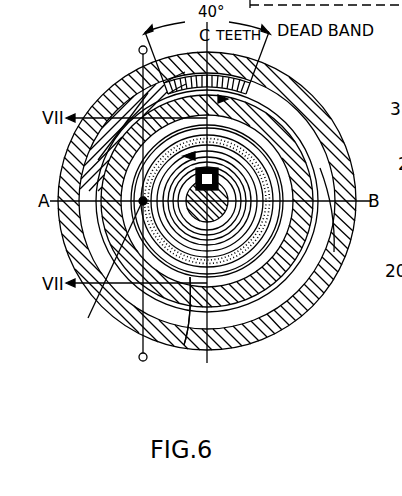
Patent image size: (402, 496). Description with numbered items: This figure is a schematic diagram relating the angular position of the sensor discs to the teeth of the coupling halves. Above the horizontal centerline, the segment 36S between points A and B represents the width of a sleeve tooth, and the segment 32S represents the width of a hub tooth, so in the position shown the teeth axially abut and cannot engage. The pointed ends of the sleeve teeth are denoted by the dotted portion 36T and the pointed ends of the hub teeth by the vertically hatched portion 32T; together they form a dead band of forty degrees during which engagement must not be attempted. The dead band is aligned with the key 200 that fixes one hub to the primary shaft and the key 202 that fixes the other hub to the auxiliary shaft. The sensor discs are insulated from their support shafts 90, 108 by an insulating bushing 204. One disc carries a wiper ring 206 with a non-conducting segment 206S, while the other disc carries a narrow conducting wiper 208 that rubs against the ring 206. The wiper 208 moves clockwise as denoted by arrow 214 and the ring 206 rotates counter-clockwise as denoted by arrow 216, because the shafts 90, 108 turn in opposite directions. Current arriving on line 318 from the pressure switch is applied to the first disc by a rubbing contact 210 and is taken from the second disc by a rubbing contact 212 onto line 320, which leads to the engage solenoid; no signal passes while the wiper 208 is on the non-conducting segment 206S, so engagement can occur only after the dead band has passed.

The insulating bushing 204 is at (232, 243).
The key 200 is at (330, 150).
The key 202 is at (330, 141).
The conducting wiper 208 is at (297, 106).
The arrow 216 is at (325, 112).
The non-conducting segment 206S is at (296, 80).
The segment 36S is at (333, 167).
The wiper ring 206 is at (257, 243).
The segment 32S is at (334, 243).
The rubbing contact 212 is at (90, 150).
The rubbing contact 210 is at (98, 268).
The arrow 214 is at (197, 67).
The dotted portion 36T is at (150, 80).
The vertically hatched portion 32T is at (165, 91).
The line 320 is at (139, 51).
The line 318 is at (139, 354).
The support shaft 90 is at (184, 345).
The support shaft 108 is at (178, 373).